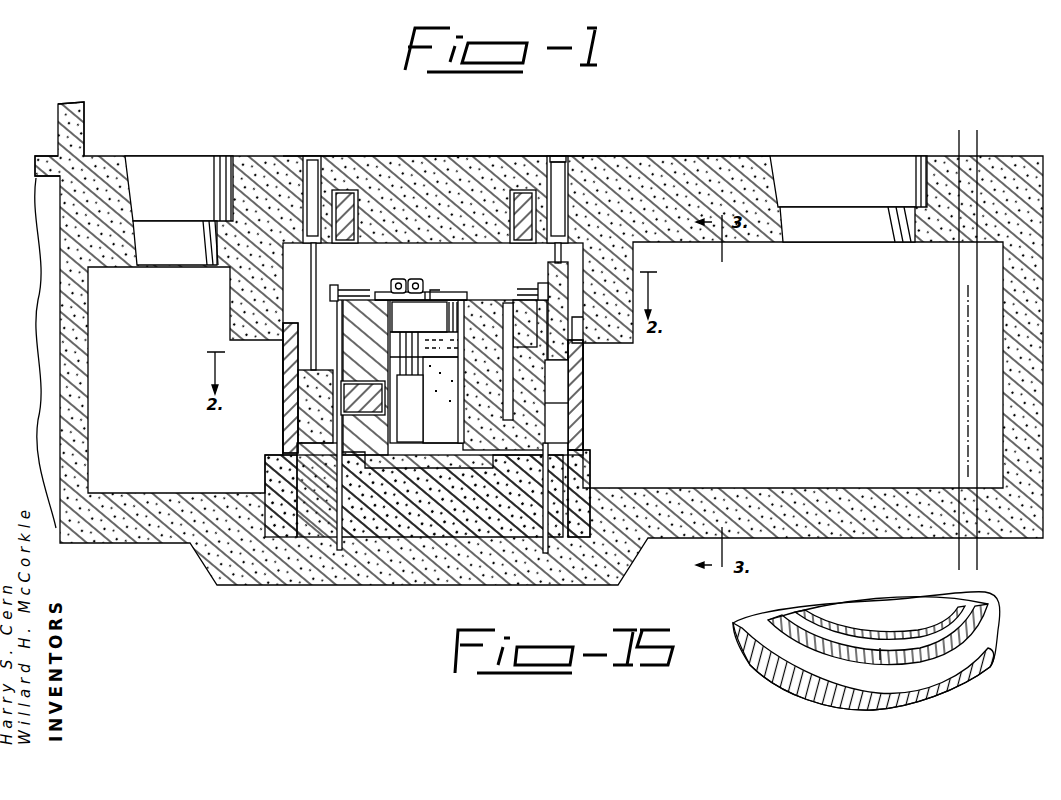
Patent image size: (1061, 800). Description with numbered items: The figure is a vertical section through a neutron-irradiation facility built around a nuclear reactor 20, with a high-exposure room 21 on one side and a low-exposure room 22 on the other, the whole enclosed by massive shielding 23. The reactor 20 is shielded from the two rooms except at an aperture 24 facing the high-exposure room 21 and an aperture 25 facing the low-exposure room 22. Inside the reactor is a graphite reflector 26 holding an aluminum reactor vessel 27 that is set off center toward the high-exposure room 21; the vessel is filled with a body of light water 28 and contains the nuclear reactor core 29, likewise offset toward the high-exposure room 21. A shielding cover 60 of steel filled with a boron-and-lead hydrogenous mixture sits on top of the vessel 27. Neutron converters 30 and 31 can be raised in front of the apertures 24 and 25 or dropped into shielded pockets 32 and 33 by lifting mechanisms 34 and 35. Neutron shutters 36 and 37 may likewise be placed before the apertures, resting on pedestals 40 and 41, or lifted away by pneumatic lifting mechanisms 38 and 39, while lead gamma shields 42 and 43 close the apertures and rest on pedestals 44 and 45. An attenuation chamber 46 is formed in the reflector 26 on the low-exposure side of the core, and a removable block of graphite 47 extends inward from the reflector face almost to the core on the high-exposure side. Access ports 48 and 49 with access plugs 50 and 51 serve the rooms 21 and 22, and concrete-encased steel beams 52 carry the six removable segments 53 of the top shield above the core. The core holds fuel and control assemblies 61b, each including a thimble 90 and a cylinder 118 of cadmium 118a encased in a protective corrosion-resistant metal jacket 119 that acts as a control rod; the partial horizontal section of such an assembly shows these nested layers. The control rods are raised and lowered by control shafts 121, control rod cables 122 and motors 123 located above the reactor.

In FIG. 1, the nuclear reactor 20 is at (485, 294).
In FIG. 1, the high-exposure room 21 is at (163, 447).
In FIG. 1, the low-exposure room 22 is at (781, 394).
In FIG. 1, the massive shielding 23 is at (1001, 350).
In FIG. 1, the aperture 24 is at (256, 409).
In FIG. 1, the aperture 25 is at (592, 394).
In FIG. 1, the graphite reflector 26 is at (473, 404).
In FIG. 1, the aluminum reactor vessel 27 is at (464, 366).
In FIG. 1, the body of light water 28 is at (434, 412).
In FIG. 1, the nuclear reactor core 29 is at (398, 416).
In FIG. 1, the neutron converter 30 is at (347, 505).
In FIG. 1, the neutron converter 31 is at (568, 403).
In FIG. 1, the shielded pocket 32 is at (343, 556).
In FIG. 1, the shielded pocket 33 is at (548, 503).
In FIG. 1, the lifting mechanism 34 is at (348, 289).
In FIG. 1, the lifting mechanism 35 is at (543, 282).
In FIG. 1, the neutron shutter 36 is at (298, 428).
In FIG. 1, the neutron shutter 37 is at (578, 366).
In FIG. 1, the pneumatic lifting mechanism 38 is at (313, 158).
In FIG. 1, the pneumatic lifting mechanism 39 is at (558, 158).
In FIG. 1, the pedestal 40 is at (320, 530).
In FIG. 1, the pedestal 41 is at (590, 466).
In FIG. 1, the lead gamma shield 42 is at (284, 372).
In FIG. 1, the lead gamma shield 43 is at (584, 432).
In FIG. 1, the pedestal 44 is at (266, 474).
In FIG. 1, the pedestal 45 is at (590, 486).
In FIG. 1, the attenuation chamber 46 is at (505, 424).
In FIG. 1, the removable block of graphite 47 is at (357, 418).
In FIG. 1, the access port 48 is at (130, 188).
In FIG. 1, the access port 49 is at (772, 178).
In FIG. 1, the access plug 50 is at (158, 198).
In FIG. 1, the access plug 51 is at (820, 192).
In FIG. 1, the concrete-encased steel beam 52 is at (348, 243).
In FIG. 1, the segment 53 is at (478, 162).
In FIG. 1, the shielding cover 60 is at (408, 329).
In FIG. 1, the control shaft 121 is at (390, 375).
In FIG. 1, the control rod cable 122 is at (447, 287).
In FIG. 1, the motor 123 is at (414, 280).
In FIG. 15, the fuel and control assembly 61b is at (802, 712).
In FIG. 15, the thimble 90 is at (945, 698).
In FIG. 15, the cylinder 118 is at (900, 630).
In FIG. 15, the cadmium 118a is at (820, 620).
In FIG. 15, the protective corrosion-resistant metal jacket 119 is at (880, 648).